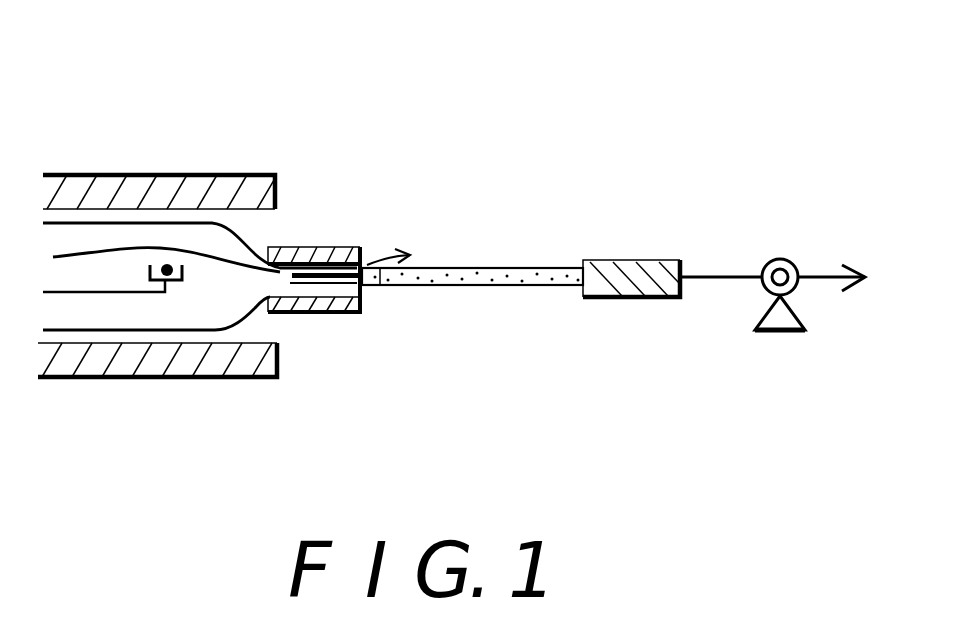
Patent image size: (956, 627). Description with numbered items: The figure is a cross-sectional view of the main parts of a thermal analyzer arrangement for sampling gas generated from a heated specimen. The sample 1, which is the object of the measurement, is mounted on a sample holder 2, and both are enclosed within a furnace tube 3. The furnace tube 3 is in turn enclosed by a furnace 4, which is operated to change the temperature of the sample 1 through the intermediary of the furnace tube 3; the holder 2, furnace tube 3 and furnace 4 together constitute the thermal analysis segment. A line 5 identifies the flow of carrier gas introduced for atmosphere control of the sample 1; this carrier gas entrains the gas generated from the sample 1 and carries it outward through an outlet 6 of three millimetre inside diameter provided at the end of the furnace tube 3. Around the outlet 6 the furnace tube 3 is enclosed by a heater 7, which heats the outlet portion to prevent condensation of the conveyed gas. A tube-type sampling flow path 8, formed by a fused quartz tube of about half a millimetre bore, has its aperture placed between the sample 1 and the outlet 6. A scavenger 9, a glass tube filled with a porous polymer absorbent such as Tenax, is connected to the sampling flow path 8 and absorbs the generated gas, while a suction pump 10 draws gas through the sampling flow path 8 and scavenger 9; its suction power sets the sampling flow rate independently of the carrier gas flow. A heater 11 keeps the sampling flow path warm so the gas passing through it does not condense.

The sample 1 is at (167, 262).
The sample holder 2 is at (175, 280).
The furnace tube 3 is at (133, 237).
The furnace 4 is at (77, 190).
The line 5 is at (230, 262).
The outlet 6 is at (365, 288).
The heater 7 is at (332, 253).
The sampling flow path 8 is at (320, 283).
The scavenger 9 is at (648, 267).
The suction pump 10 is at (783, 317).
The heater 11 is at (515, 278).